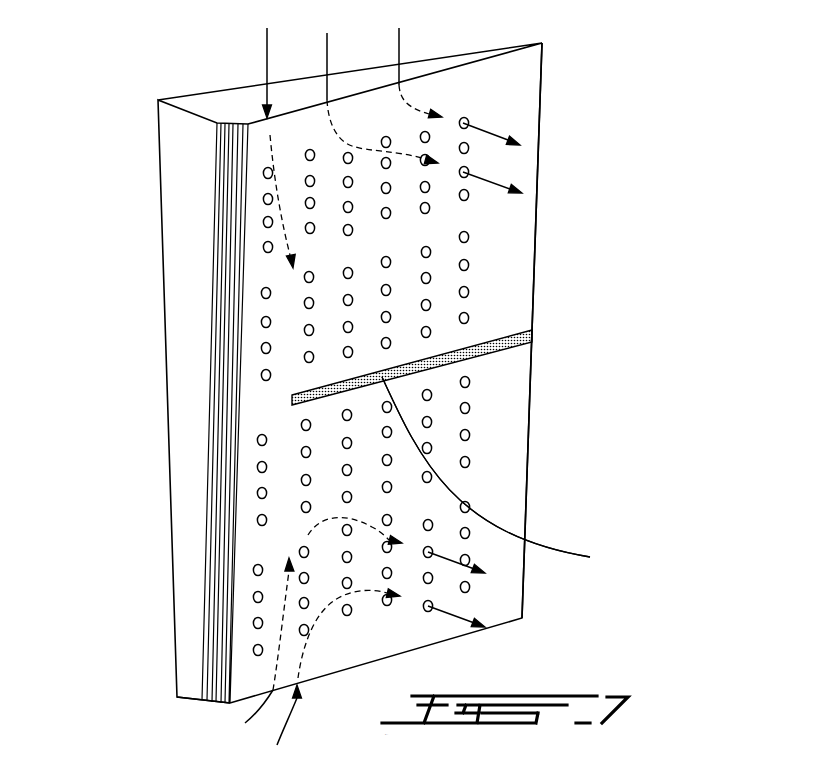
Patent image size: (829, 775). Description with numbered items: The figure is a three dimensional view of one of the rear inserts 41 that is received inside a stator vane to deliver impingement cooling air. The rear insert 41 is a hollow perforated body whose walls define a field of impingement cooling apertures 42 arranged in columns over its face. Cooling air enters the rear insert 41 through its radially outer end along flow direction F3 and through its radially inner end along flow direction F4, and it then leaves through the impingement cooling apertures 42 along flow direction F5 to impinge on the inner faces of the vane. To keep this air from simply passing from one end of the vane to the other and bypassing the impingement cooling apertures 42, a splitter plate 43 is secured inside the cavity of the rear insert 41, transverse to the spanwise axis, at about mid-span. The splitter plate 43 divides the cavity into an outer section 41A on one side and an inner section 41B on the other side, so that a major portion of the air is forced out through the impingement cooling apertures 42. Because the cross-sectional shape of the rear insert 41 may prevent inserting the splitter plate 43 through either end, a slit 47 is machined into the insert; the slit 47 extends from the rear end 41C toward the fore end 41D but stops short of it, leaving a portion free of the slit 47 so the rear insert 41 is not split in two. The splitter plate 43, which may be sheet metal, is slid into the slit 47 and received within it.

The rear insert 41 is at (641, 134).
The outer section of the cavity 41A is at (147, 88).
The inner section of the cavity 41B is at (147, 414).
The rear end 41C is at (528, 470).
The fore end 41D is at (190, 462).
The impingement cooling apertures 42 is at (463, 317).
The slit 47 is at (515, 477).
The splitter plate 43 is at (515, 477).
The flow direction F3 is at (267, 45).
The flow direction F4 is at (277, 745).
The flow direction F5 is at (493, 183).